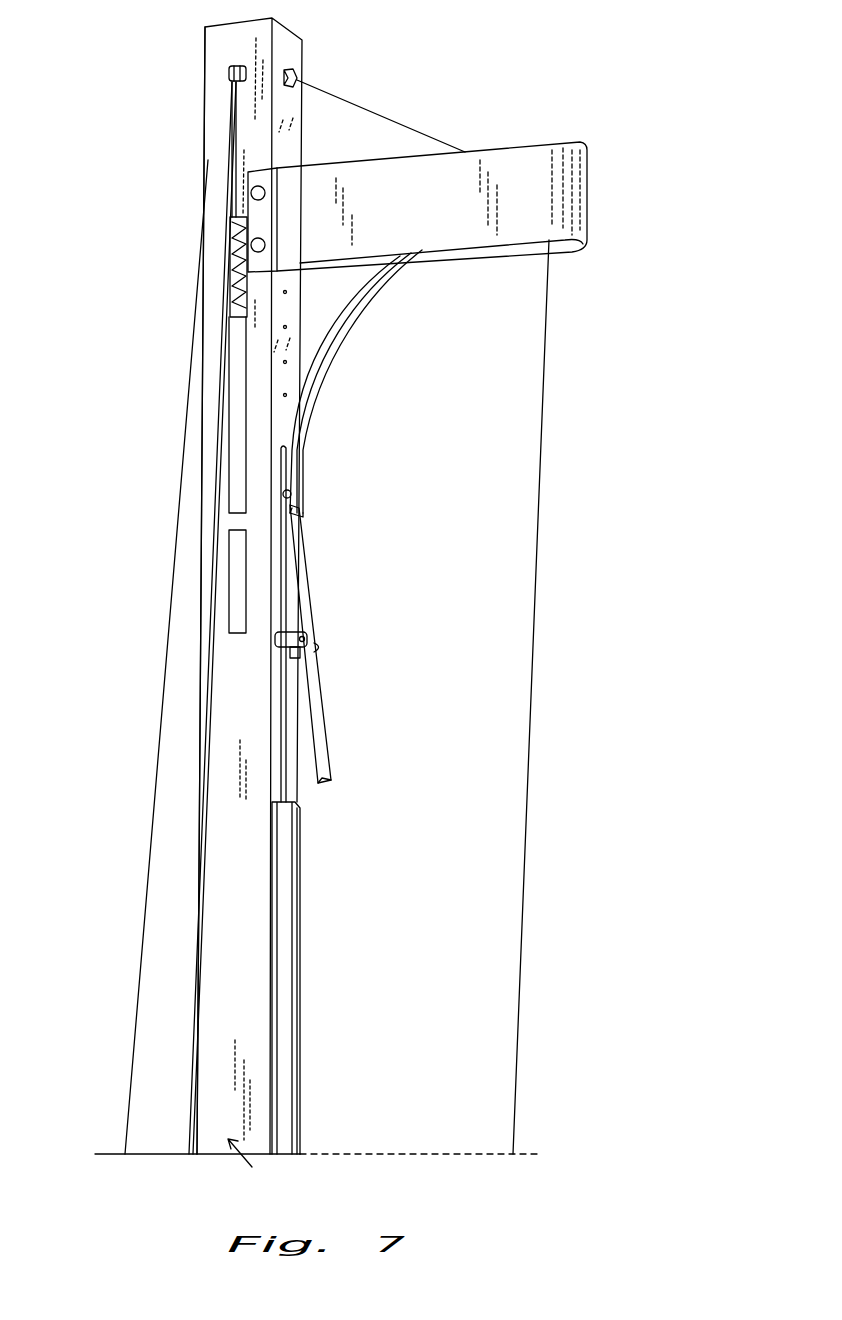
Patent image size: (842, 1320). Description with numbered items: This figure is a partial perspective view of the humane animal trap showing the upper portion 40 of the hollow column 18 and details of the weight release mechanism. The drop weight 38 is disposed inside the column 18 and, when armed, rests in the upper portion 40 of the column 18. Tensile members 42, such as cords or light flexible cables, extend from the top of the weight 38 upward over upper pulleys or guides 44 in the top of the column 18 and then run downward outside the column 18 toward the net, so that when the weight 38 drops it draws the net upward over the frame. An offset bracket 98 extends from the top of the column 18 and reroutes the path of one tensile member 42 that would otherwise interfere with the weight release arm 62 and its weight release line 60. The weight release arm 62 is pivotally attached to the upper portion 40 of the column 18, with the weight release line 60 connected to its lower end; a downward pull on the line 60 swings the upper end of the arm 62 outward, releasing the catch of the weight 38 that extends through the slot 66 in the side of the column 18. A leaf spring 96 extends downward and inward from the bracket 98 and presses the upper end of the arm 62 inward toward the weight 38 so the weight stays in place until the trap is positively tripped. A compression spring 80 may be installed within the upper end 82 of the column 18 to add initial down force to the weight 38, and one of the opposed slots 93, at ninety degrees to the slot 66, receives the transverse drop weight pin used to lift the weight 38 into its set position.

The hollow column 18 is at (250, 918).
The drop weight 38 is at (233, 480).
The upper portion of the column 40 is at (203, 398).
The tensile members 42 is at (200, 695).
The upper pulleys or guides 44 is at (230, 83).
The weight release line 60 is at (301, 803).
The weight release arm 62 is at (308, 577).
The slot 66 is at (283, 717).
The compression spring 80 is at (232, 290).
The upper end of the column 82 is at (205, 76).
The slots for the drop weight pin 93 is at (213, 597).
The leaf spring 96 is at (350, 342).
The offset bracket 98 is at (587, 190).